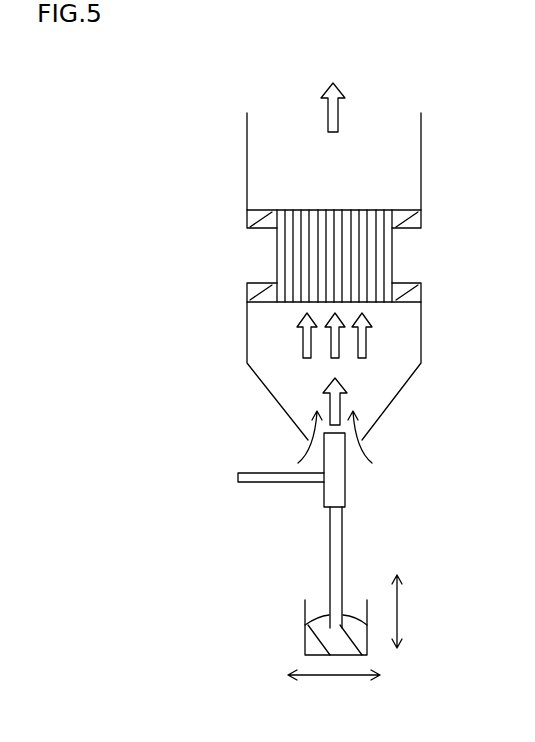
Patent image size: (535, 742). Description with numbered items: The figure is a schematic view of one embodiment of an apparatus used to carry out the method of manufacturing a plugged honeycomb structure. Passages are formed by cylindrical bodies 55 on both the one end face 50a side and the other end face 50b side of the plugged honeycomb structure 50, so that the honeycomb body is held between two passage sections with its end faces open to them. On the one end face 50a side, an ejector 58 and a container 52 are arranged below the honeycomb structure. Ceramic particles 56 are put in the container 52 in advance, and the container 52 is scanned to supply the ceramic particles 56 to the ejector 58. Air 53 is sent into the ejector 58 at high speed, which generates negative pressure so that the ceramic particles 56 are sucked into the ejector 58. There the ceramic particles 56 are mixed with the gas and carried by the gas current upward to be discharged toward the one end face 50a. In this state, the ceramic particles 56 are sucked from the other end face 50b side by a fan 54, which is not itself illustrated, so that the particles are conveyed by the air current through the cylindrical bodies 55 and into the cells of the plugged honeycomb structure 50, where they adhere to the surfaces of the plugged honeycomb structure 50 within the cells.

The plugged honeycomb structure 50 is at (392, 247).
The one end face 50a is at (368, 302).
The other end face 50b is at (368, 210).
The container 52 is at (305, 632).
The air 53 is at (216, 483).
The fan 54 is at (335, 94).
The cylindrical bodies 55 is at (421, 145).
The ceramic particles 56 is at (362, 638).
The ejector 58 is at (345, 490).